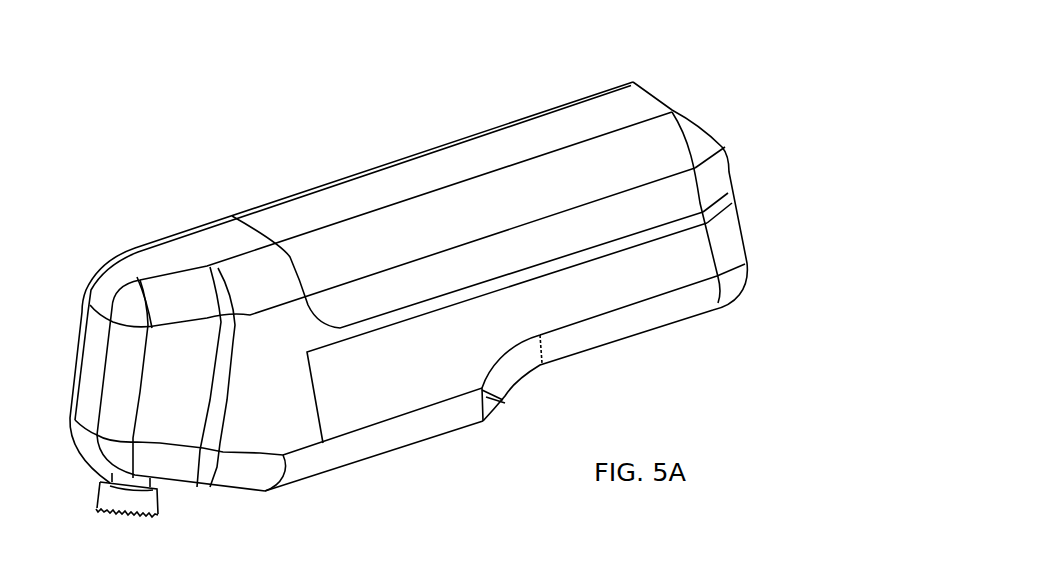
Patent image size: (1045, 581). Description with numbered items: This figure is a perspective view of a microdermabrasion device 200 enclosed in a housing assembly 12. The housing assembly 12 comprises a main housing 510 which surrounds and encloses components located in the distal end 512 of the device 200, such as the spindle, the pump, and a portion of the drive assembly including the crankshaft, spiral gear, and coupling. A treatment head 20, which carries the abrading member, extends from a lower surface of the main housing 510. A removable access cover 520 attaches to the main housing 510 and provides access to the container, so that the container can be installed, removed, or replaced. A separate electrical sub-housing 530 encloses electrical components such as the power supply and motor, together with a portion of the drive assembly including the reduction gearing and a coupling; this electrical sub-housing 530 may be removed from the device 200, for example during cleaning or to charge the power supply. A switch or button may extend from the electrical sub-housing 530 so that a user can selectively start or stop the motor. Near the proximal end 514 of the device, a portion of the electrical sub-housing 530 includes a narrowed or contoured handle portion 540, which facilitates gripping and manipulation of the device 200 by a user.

The device 200 is at (657, 40).
The housing assembly 12 is at (192, 223).
The main housing 510 is at (107, 298).
The distal end 512 is at (72, 378).
The proximal end 514 is at (677, 97).
The removable access cover 520 is at (472, 147).
The electrical sub-housing 530 is at (423, 420).
The handle portion 540 is at (627, 338).
The treatment head 20 is at (120, 498).